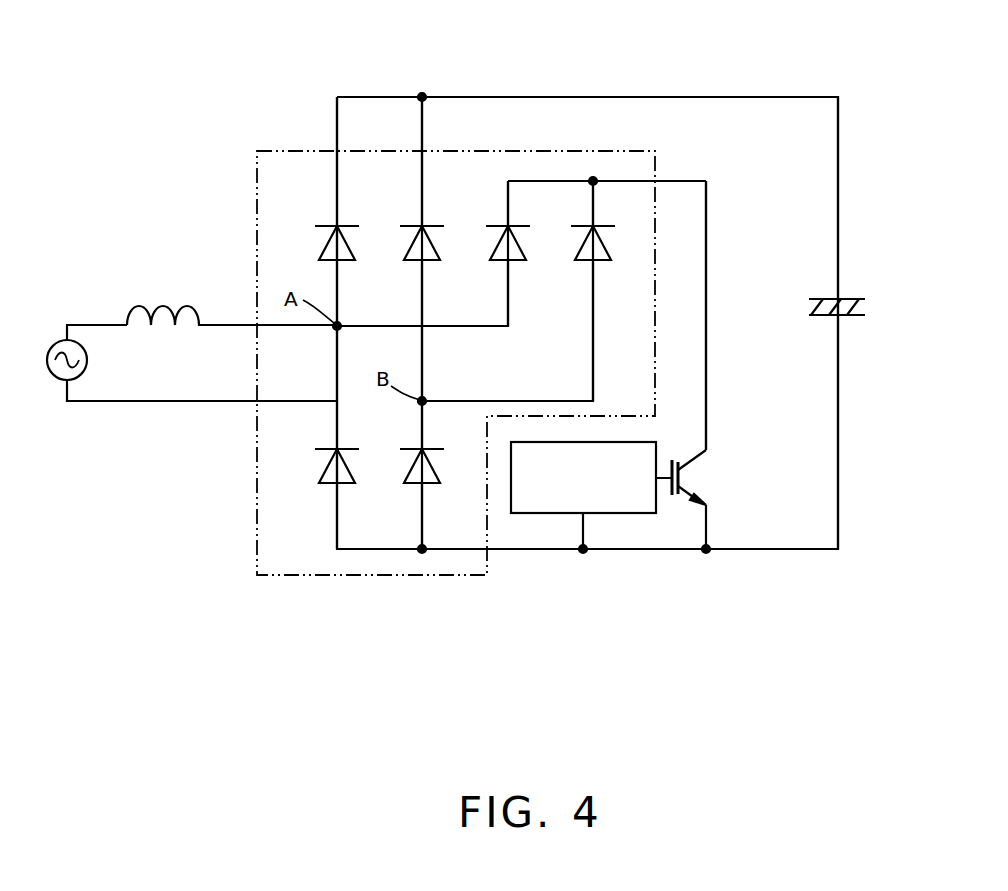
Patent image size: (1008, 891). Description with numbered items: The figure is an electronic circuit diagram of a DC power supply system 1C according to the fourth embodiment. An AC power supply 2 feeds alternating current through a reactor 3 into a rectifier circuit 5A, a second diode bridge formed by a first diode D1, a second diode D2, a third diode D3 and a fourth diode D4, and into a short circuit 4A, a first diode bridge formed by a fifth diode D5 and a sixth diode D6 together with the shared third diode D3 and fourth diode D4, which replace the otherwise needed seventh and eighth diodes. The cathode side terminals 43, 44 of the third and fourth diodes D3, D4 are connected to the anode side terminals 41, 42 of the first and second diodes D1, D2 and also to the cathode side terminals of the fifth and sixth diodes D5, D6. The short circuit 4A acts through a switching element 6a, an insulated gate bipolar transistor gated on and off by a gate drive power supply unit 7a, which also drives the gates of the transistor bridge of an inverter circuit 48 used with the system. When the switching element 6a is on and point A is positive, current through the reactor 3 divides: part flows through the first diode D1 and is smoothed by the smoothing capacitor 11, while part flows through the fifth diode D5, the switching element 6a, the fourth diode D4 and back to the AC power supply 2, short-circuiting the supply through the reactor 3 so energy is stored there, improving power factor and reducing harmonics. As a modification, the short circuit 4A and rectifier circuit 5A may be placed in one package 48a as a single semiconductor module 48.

The DC power supply system 1C is at (581, 95).
The AC power supply 2 is at (56, 338).
The reactor 3 is at (165, 305).
The short circuit 4A is at (596, 258).
The rectifier circuit 5A is at (353, 95).
The IGBT 6a is at (710, 461).
The gate drive power supply unit 7a is at (642, 442).
The smoothing capacitor 11 is at (852, 299).
The anode side terminal of the first diode 41 is at (339, 211).
The anode side terminal of the second diode 42 is at (426, 249).
The cathode side terminal of the third diode 43 is at (312, 437).
The cathode side terminal of the fourth diode 44 is at (421, 475).
The semiconductor module 48 is at (654, 150).
The package 48a is at (656, 197).
The first diode D1 is at (326, 257).
The second diode D2 is at (411, 257).
The third diode D3 is at (320, 473).
The fourth diode D4 is at (403, 474).
The fifth diode D5 is at (522, 258).
The sixth diode D6 is at (610, 258).